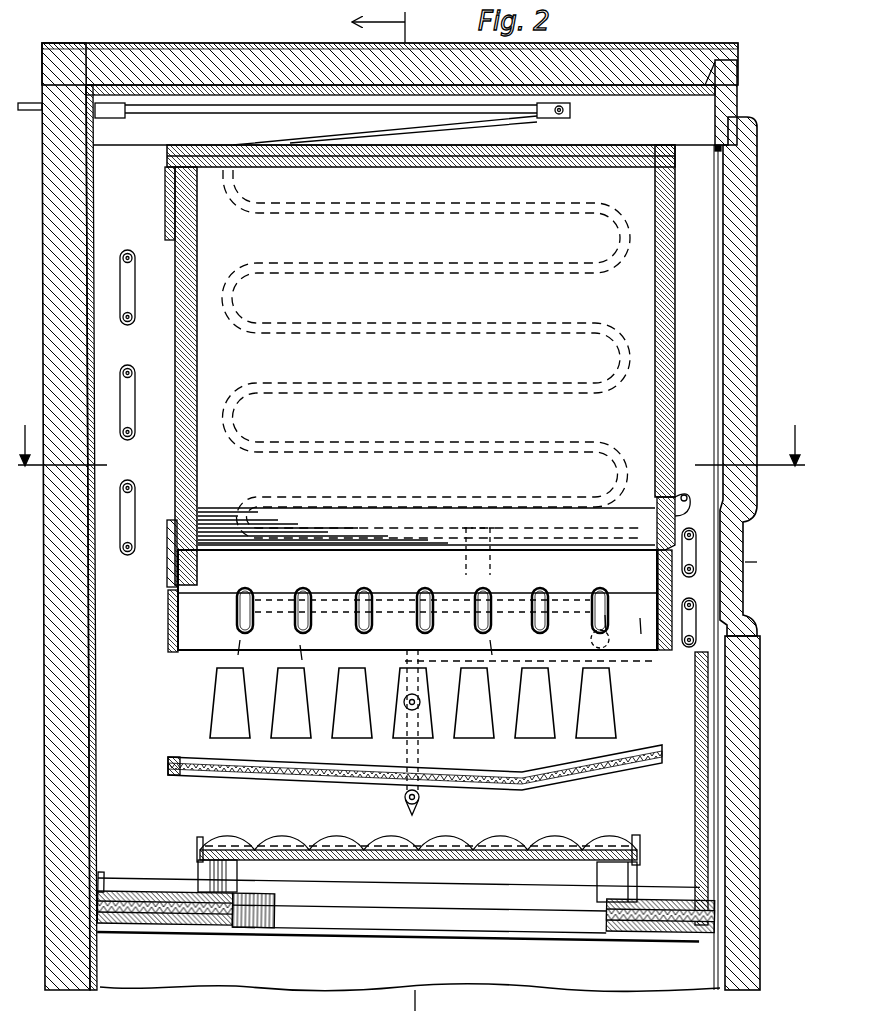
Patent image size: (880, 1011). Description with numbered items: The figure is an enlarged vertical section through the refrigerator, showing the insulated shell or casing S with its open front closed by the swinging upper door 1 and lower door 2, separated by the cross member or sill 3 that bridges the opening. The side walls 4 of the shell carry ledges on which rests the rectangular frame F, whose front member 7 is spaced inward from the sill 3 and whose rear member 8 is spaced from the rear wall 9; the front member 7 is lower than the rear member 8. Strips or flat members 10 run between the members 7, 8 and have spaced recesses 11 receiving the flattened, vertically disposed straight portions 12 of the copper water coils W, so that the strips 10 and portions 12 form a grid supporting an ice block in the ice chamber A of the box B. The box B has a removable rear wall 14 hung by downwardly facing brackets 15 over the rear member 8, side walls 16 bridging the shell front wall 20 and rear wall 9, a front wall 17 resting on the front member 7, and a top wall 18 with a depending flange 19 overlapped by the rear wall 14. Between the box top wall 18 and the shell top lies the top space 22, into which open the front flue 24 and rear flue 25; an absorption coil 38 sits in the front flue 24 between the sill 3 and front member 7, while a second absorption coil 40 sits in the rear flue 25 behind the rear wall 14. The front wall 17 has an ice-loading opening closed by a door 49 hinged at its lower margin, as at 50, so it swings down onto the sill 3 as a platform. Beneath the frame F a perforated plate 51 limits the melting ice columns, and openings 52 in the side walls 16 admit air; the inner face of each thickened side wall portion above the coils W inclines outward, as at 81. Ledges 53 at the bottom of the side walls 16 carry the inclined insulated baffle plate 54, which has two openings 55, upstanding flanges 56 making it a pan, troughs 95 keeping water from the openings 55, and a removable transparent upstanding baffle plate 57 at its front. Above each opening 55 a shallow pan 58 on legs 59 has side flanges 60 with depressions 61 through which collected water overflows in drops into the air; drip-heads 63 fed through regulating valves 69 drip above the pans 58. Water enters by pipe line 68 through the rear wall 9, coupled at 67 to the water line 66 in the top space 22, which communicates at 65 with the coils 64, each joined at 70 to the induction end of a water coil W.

The shell or casing S is at (112, 42).
The upper door 1 is at (742, 331).
The lower door 2 is at (745, 703).
The cross member or sill 3 is at (770, 566).
The side walls 4 is at (410, 429).
The front member 7 is at (657, 578).
The rear member 8 is at (170, 629).
The rear wall 9 is at (88, 234).
The strips or flat members 10 is at (207, 654).
The spaced recesses 11 is at (236, 607).
The straight portions 12 is at (362, 589).
The rear wall 14 is at (197, 361).
The downwardly facing brackets 15 is at (167, 520).
The side walls 16 is at (160, 123).
The front wall 17 is at (655, 522).
The top wall 18 is at (445, 167).
The depending flange or strip 19 is at (166, 209).
The front wall 20 is at (738, 99).
The top space 22 is at (638, 167).
The front flue 24 is at (698, 251).
The rear flue 25 is at (158, 277).
The absorption coil 38 is at (697, 548).
The second absorption coil 40 is at (133, 406).
The door 49 is at (656, 281).
The hinge connection 50 is at (686, 490).
The perforated plate 51 is at (375, 779).
The openings 52 is at (570, 700).
The ledges 53 is at (476, 940).
The baffle plate 54 is at (160, 926).
The openings 55 is at (585, 930).
The upstanding flanges 56 is at (104, 881).
The upstanding baffle plate 57 is at (696, 801).
The pan 58 is at (550, 862).
The depending legs 59 is at (236, 863).
The upstanding side flanges 60 is at (200, 845).
The spaced depressions 61 is at (500, 839).
The drip-heads 63 is at (427, 804).
The coils 64 is at (446, 347).
The communication line 65 is at (565, 116).
The water line 66 is at (228, 121).
The coupling 67 is at (113, 118).
The pipe line 68 is at (26, 112).
The regulating valve 69 is at (421, 704).
The communication 70 is at (470, 578).
The incline 81 is at (340, 520).
The troughs 95 is at (240, 875).
The ice compartment or chamber A is at (620, 314).
The box B is at (178, 354).
The frame F is at (167, 602).
The water coils W is at (546, 593).